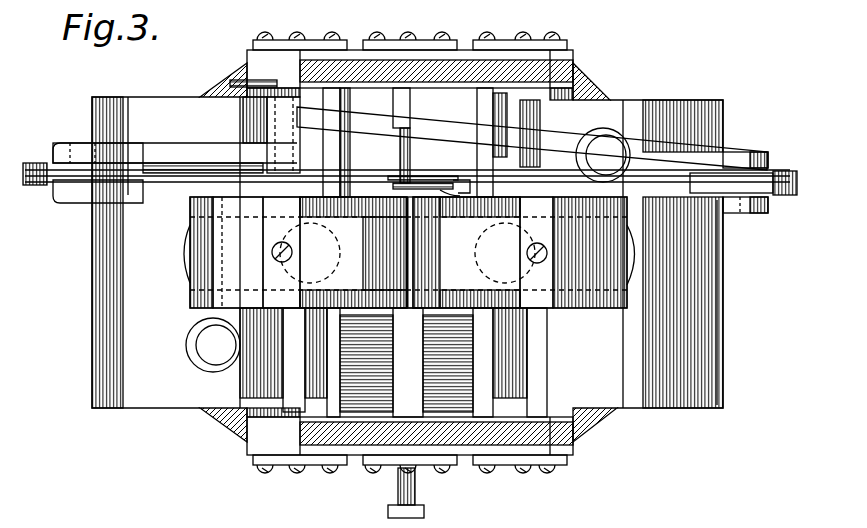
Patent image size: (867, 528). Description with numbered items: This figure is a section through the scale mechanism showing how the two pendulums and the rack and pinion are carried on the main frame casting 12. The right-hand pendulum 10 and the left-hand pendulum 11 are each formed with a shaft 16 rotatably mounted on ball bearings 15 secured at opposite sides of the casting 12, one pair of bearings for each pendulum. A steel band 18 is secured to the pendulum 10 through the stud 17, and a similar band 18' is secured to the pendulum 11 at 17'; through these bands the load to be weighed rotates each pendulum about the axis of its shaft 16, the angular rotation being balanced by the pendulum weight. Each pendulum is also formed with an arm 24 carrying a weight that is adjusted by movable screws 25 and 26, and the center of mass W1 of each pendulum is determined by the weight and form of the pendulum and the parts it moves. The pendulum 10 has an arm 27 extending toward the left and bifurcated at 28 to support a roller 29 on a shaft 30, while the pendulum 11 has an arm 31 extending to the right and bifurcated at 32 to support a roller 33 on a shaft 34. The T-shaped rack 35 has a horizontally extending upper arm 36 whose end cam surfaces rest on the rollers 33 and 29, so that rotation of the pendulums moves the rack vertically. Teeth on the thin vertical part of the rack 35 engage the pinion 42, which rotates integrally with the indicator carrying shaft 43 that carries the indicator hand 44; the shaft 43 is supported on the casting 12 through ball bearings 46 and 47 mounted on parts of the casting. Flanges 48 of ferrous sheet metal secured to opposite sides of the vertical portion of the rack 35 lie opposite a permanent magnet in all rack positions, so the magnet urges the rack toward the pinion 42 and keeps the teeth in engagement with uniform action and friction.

The center of mass W1 is at (90, 385).
The right-hand pendulum 10 is at (630, 296).
The left-hand pendulum 11 is at (190, 260).
The main frame casting 12 is at (523, 70).
The ball bearings 15 is at (292, 30).
The shaft 16 is at (293, 97).
The stud 17 is at (515, 252).
The securing point 17' is at (281, 252).
The steel band 18 is at (474, 252).
The band 18' is at (408, 252).
The arm 24 is at (633, 260).
The movable screw 25 is at (717, 350).
The movable screw 26 is at (610, 140).
The arm 27 is at (177, 150).
The bifurcation 28 is at (57, 145).
The roller 29 is at (45, 165).
The shaft 30 is at (85, 150).
The arm 31 is at (573, 133).
The bifurcation 32 is at (770, 152).
The roller 33 is at (785, 172).
The shaft 34 is at (740, 213).
The rack 35 is at (185, 182).
The horizontally extending upper arm 36 is at (158, 177).
The pinion 42 is at (410, 190).
The shaft 43 is at (417, 330).
The indicator hand 44 is at (387, 508).
The ball bearing 46 is at (397, 40).
The ball bearing 47 is at (455, 457).
The flanges 48 is at (458, 193).